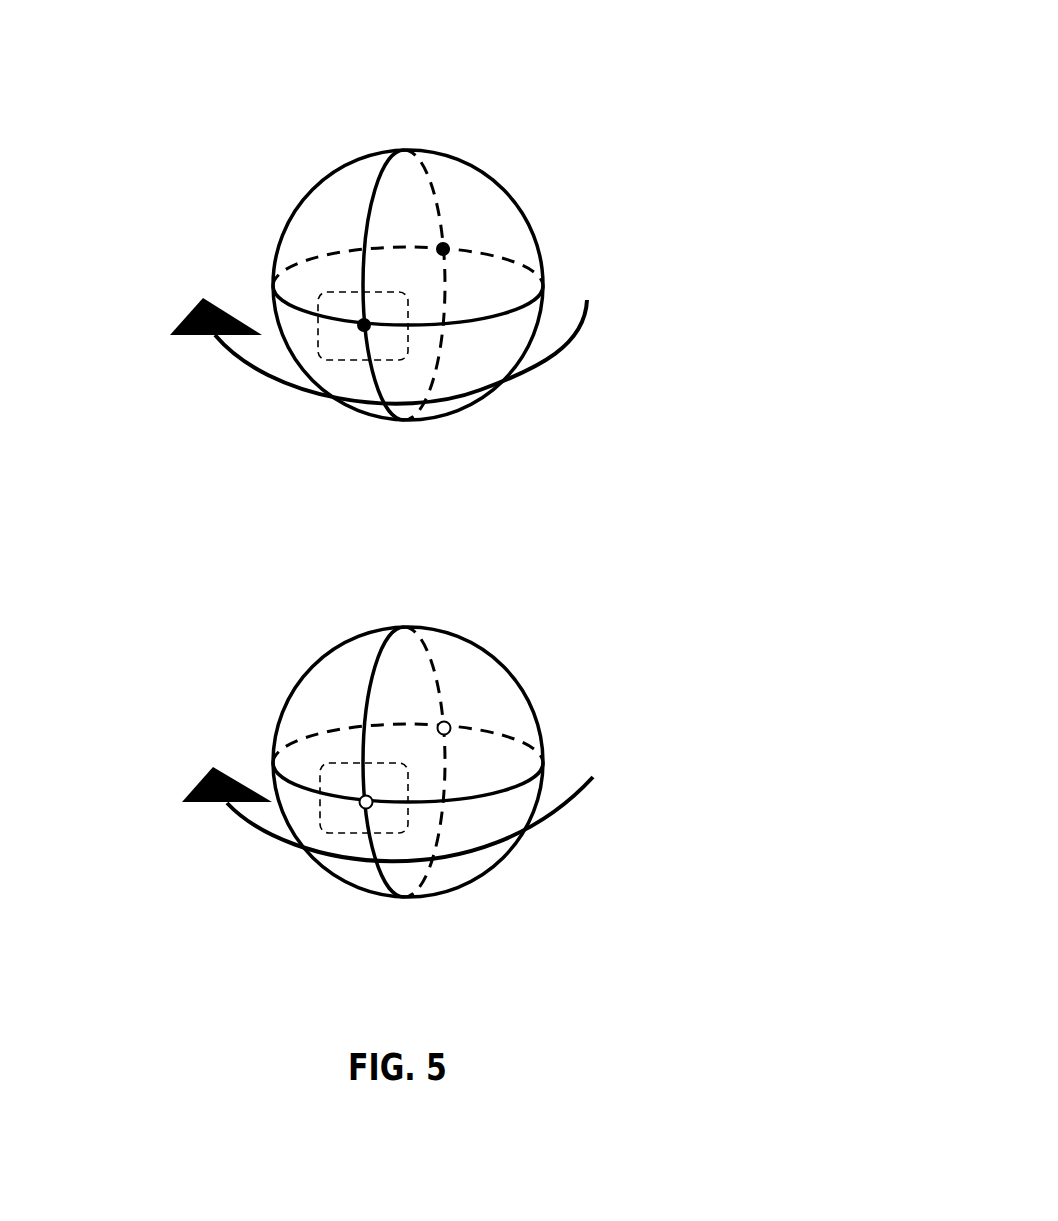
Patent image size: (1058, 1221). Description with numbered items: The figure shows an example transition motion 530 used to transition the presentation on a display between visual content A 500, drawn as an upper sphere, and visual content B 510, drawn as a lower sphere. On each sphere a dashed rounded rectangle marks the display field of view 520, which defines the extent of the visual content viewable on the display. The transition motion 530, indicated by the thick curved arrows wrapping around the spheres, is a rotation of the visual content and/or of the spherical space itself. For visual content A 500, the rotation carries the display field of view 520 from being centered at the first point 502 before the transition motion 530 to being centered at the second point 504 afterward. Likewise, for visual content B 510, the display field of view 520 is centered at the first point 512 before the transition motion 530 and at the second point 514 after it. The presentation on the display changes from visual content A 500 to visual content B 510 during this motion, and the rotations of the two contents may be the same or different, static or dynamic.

The visual content A 500 is at (598, 50).
The point A-1 502 is at (366, 325).
The point A-2 504 is at (442, 250).
The visual content B 510 is at (300, 888).
The point B-1 512 is at (372, 803).
The point B-2 514 is at (440, 722).
The display field of view 520 is at (322, 362).
The transition motion 530 is at (593, 777).